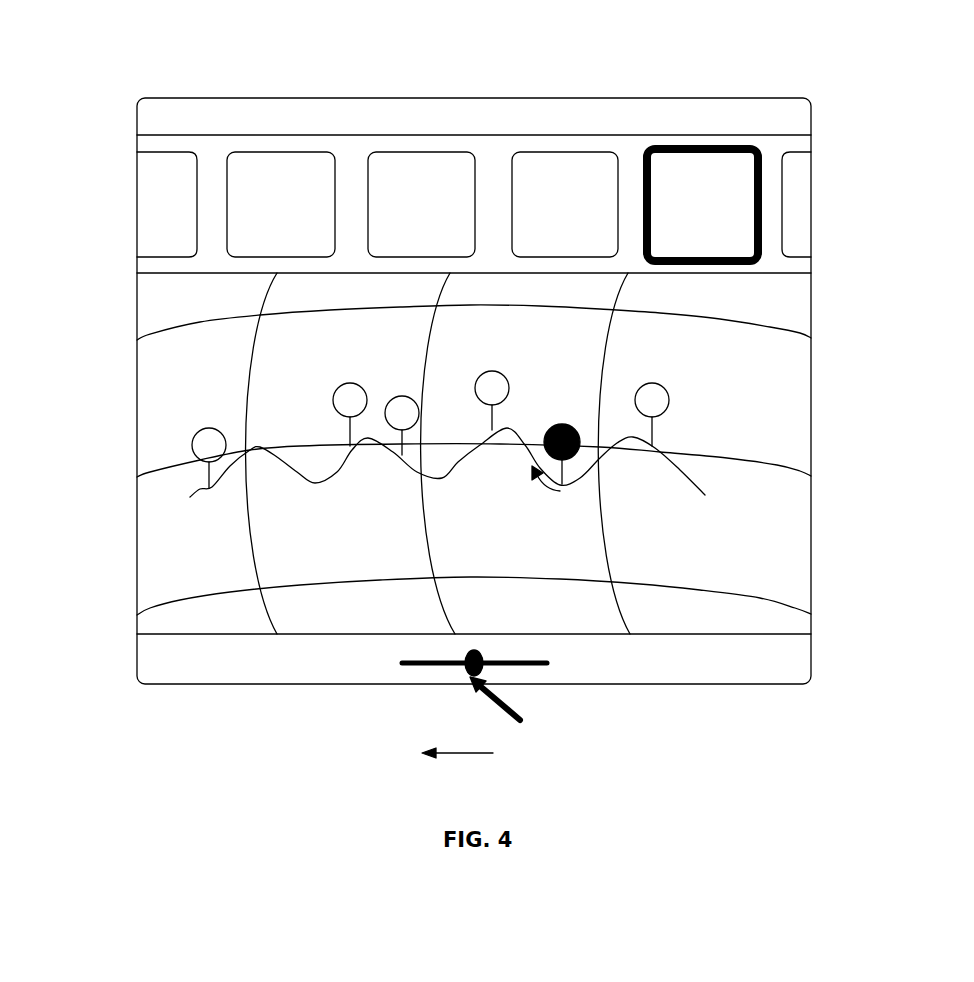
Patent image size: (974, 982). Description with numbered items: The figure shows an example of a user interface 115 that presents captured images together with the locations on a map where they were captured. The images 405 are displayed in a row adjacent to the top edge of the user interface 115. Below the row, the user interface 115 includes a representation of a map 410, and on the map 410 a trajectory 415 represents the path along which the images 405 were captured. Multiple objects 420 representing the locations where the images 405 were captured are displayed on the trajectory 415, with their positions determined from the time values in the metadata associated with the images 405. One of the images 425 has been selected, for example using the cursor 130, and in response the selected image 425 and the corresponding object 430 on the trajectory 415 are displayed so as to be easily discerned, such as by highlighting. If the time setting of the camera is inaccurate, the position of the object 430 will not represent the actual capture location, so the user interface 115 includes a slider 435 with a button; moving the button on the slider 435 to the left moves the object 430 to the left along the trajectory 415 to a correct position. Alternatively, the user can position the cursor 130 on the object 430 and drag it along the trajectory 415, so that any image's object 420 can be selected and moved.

The user interface 115 is at (137, 308).
The images 405 is at (420, 187).
The selected image 425 is at (702, 169).
The map 410 is at (740, 374).
The trajectory 415 is at (303, 483).
The objects 420 is at (545, 445).
The object corresponding to the selected image 430 is at (572, 458).
The slider 435 is at (547, 663).
The cursor 130 is at (520, 720).